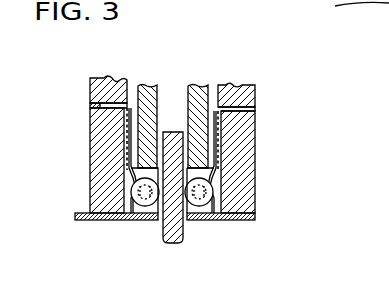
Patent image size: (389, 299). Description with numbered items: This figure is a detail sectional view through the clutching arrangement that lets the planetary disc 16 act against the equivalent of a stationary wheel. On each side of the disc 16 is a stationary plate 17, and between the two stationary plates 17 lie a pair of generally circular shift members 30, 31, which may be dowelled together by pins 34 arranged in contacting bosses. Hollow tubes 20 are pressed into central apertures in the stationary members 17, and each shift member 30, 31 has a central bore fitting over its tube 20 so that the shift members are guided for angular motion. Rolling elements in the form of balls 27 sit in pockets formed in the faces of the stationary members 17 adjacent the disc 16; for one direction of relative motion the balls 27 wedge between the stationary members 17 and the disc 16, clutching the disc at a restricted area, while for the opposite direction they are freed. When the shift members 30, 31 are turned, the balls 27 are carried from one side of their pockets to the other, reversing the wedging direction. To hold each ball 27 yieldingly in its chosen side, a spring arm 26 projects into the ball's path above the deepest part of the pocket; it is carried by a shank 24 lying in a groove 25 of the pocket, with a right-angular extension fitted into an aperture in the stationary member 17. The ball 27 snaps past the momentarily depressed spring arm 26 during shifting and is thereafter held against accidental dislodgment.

The disc 16 is at (175, 243).
The stationary plate 17 is at (110, 78).
The hollow tube 20 is at (106, 221).
The shank 24 is at (130, 127).
The groove 25 is at (128, 147).
The spring arm 26 is at (129, 173).
The rolling element 27 is at (147, 205).
The shift member 30 is at (162, 64).
The shift member 31 is at (196, 85).
The pin 34 is at (344, 11).